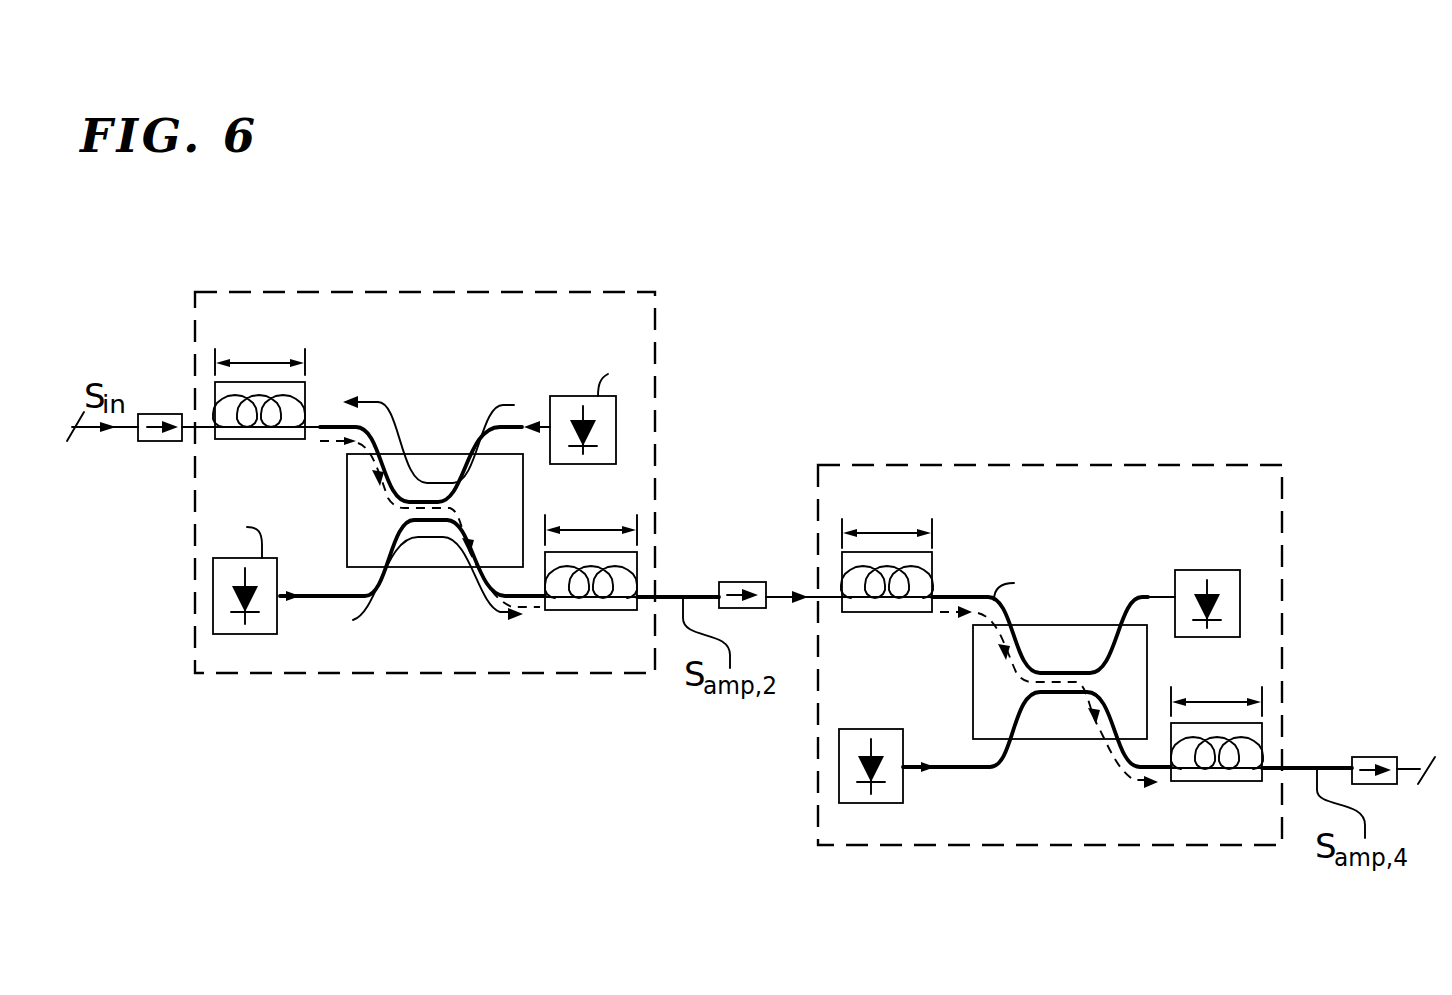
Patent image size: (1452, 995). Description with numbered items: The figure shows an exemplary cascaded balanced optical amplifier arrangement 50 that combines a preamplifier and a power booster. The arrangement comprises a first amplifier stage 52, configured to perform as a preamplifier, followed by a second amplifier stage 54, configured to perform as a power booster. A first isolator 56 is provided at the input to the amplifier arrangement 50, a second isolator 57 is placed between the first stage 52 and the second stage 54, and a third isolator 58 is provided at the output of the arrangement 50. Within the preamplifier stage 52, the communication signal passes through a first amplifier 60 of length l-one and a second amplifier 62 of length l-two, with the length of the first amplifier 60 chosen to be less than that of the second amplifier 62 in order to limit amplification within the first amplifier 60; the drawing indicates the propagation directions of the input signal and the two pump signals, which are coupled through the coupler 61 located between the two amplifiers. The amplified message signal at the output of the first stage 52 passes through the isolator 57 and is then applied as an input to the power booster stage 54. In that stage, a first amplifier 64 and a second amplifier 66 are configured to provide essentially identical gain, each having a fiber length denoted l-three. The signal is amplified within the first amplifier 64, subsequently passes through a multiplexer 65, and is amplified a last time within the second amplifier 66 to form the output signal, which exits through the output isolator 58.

The cascaded balanced optical amplifier arrangement 50 is at (290, 268).
The first amplifier stage 52 is at (698, 352).
The second amplifier stage 54 is at (1325, 525).
The first isolator 56 is at (168, 450).
The second isolator 57 is at (744, 580).
The third isolator 58 is at (1375, 756).
The first amplifier 60 is at (240, 439).
The pre-amplifier fiber coupler 61 is at (347, 512).
The second amplifier 62 is at (598, 610).
The first amplifier 64 is at (866, 612).
The multiplexer 65 is at (1070, 739).
The second amplifier 66 is at (1218, 781).